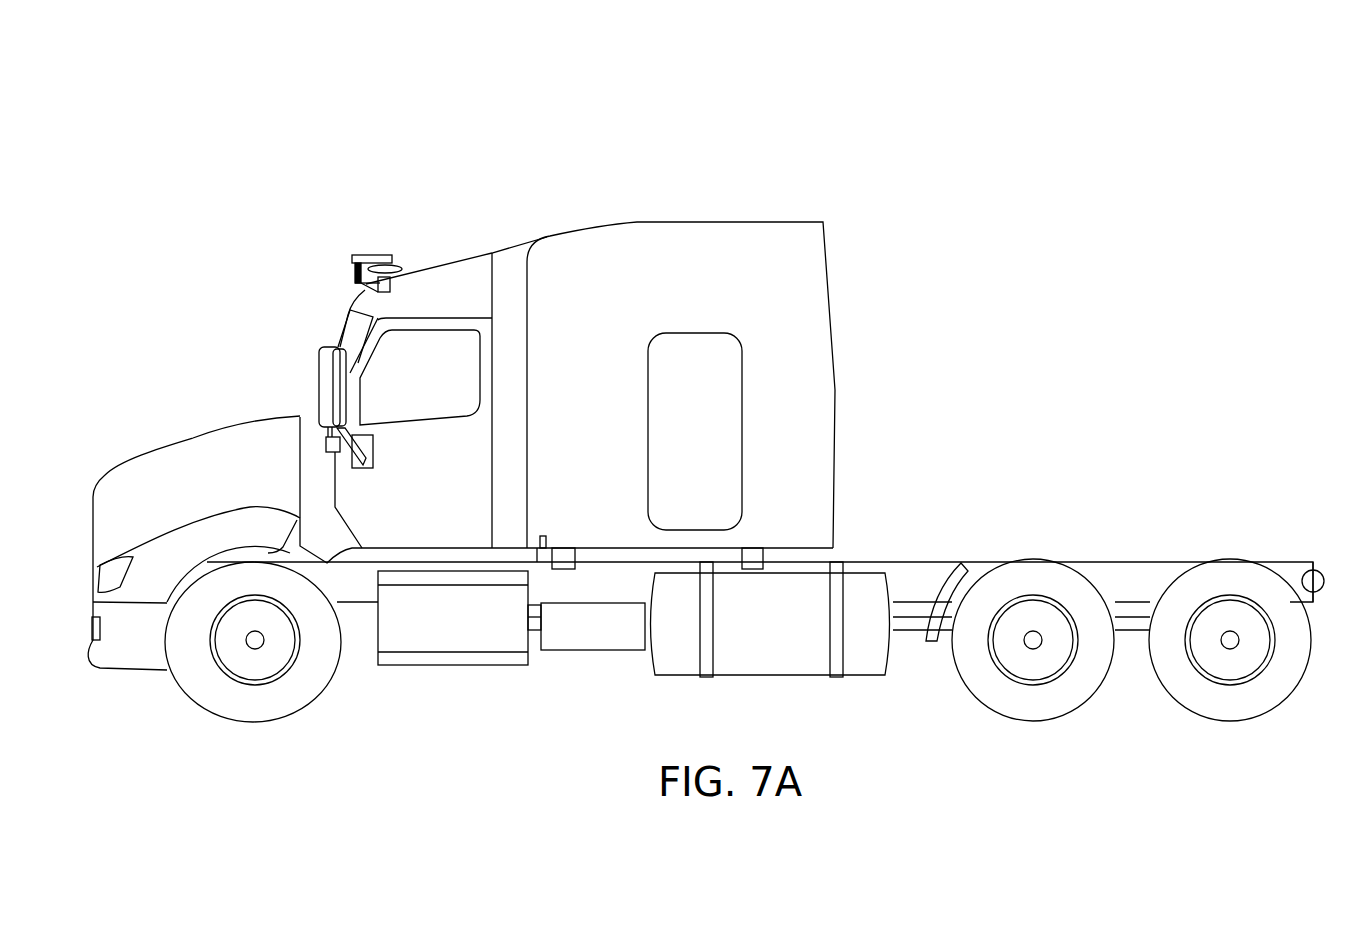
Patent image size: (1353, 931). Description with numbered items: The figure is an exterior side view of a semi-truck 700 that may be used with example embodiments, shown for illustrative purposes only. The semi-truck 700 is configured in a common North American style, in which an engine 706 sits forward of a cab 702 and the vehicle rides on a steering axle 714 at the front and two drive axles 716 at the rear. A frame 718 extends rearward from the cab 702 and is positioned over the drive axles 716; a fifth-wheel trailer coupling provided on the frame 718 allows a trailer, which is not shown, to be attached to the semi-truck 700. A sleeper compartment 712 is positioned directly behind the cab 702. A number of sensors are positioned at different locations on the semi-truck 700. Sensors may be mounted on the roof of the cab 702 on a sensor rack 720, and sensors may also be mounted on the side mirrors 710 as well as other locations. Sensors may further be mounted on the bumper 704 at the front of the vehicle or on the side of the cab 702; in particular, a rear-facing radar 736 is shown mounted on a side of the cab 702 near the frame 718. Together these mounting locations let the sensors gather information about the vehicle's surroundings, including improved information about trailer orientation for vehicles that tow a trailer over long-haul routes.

The semi-truck 700 is at (403, 130).
The cab 702 is at (437, 268).
The bumper 704 is at (86, 660).
The engine 706 is at (188, 437).
The side mirrors 710 is at (333, 346).
The sleeper compartment 712 is at (703, 222).
The steering axle 714 is at (300, 682).
The drive axles 716 is at (1032, 703).
The frame 718 is at (1140, 561).
The sensor rack 720 is at (368, 247).
The rear-facing radar 736 is at (543, 548).